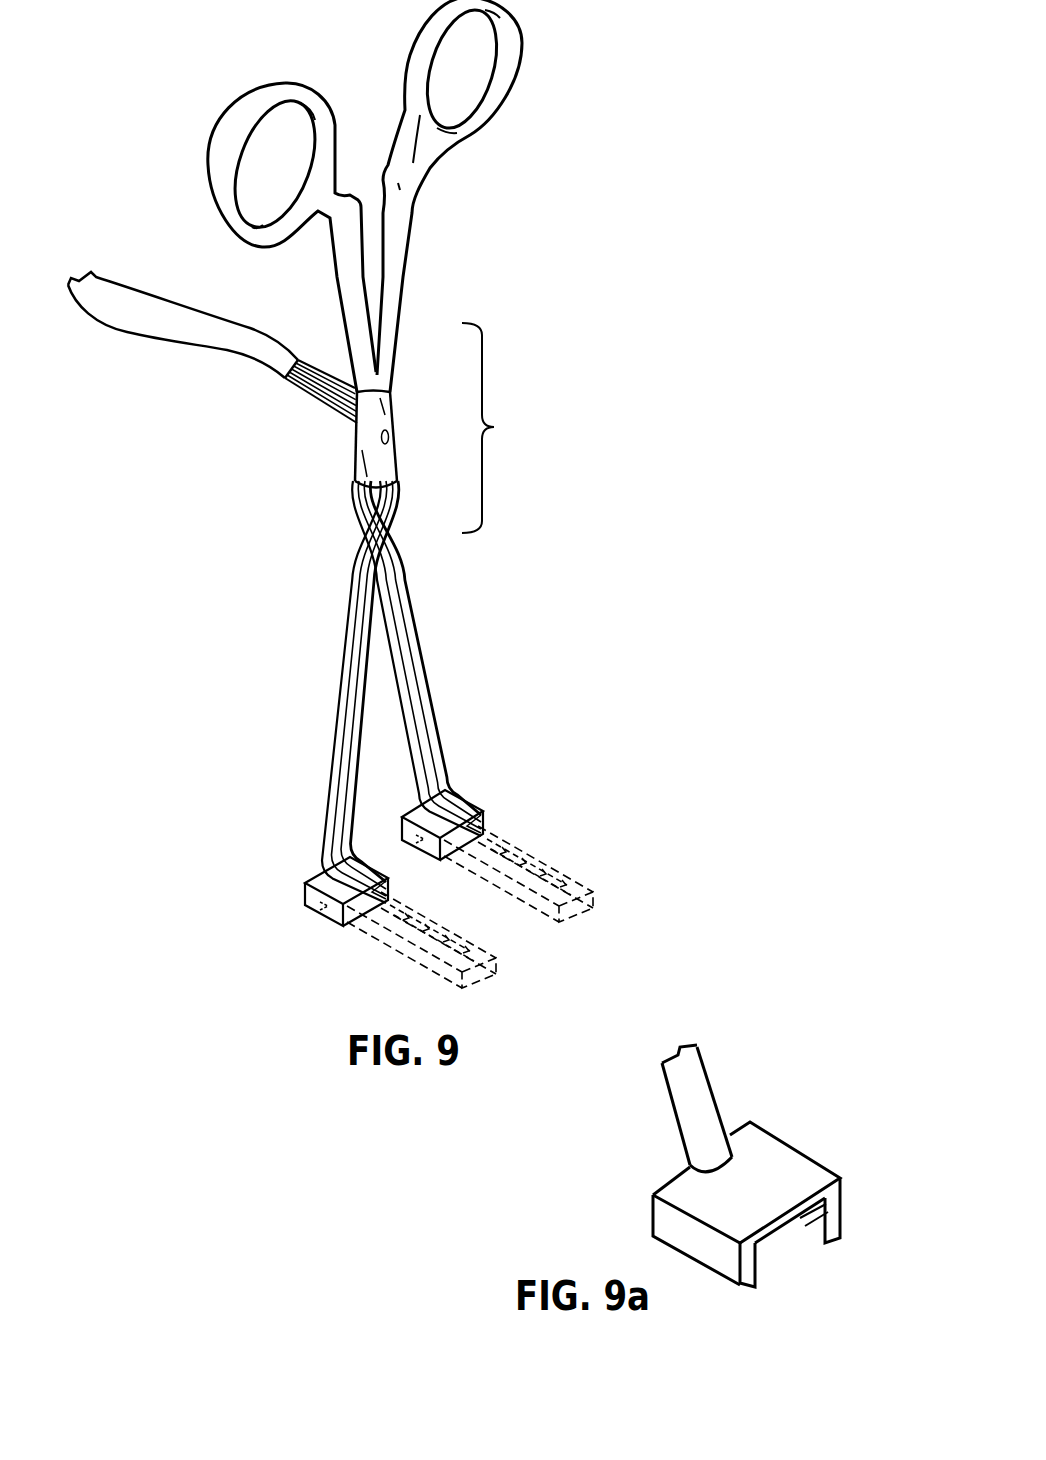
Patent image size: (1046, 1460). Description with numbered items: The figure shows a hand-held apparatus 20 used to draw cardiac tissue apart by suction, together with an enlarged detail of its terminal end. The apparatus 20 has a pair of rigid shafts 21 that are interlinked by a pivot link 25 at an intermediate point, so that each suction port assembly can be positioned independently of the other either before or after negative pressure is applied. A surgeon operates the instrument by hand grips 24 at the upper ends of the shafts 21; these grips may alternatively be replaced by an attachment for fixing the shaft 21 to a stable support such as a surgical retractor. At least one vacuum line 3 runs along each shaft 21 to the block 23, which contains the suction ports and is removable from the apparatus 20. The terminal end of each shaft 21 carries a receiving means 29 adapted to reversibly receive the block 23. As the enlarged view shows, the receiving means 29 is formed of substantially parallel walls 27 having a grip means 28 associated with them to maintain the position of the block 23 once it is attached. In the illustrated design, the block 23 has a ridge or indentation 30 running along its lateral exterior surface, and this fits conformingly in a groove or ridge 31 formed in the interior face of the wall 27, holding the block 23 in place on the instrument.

In FIG. 9, the vacuum line 3 is at (417, 690).
In FIG. 9, the hand-held apparatus 20 is at (495, 428).
In FIG. 9, the shaft 21 is at (352, 611).
In FIG. 9, the block 23 is at (490, 915).
In FIG. 9, the hand grips 24 is at (222, 154).
In FIG. 9, the pivot link 25 is at (392, 438).
In FIG. 9A, the walls 27 is at (840, 1206).
In FIG. 9A, the grip means 28 is at (776, 1234).
In FIG. 9, the receiving means 29 is at (417, 813).
In FIG. 9A, the receiving means 29 is at (771, 1188).
In FIG. 9, the ridge or indentation 30 is at (463, 868).
In FIG. 9, the groove or ridge 31 is at (401, 829).
In FIG. 9A, the groove or ridge 31 is at (845, 1228).